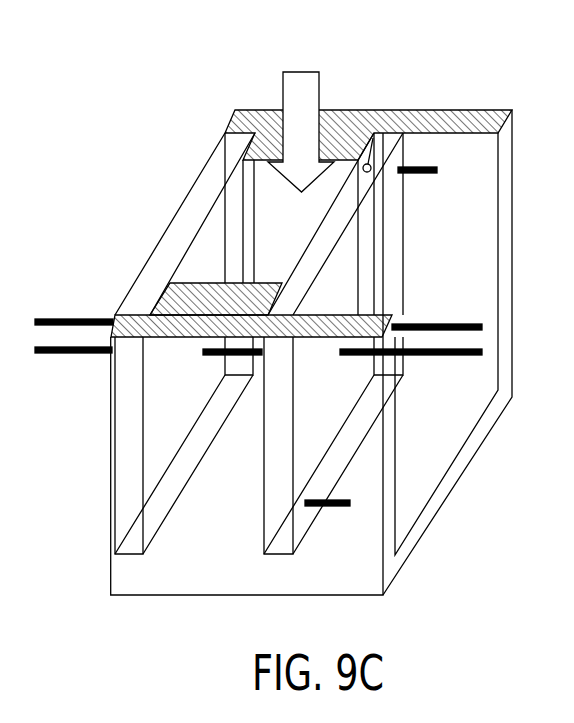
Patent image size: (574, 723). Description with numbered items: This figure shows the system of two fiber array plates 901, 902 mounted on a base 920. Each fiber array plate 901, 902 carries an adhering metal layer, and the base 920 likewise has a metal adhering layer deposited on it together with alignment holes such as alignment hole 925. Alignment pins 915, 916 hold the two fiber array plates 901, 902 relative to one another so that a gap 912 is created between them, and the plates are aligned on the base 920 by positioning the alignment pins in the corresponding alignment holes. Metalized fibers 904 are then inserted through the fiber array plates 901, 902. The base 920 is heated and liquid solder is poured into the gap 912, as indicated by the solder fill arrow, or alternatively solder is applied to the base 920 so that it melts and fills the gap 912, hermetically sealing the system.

The base 920 is at (110, 497).
The alignment hole 925 is at (378, 131).
The gap 912 is at (301, 102).
The fiber array plate 902 is at (145, 472).
The fiber array plate 901 is at (262, 513).
The metalized fibers 904 is at (424, 323).
The alignment pin 916 is at (420, 174).
The alignment pin 915 is at (331, 507).